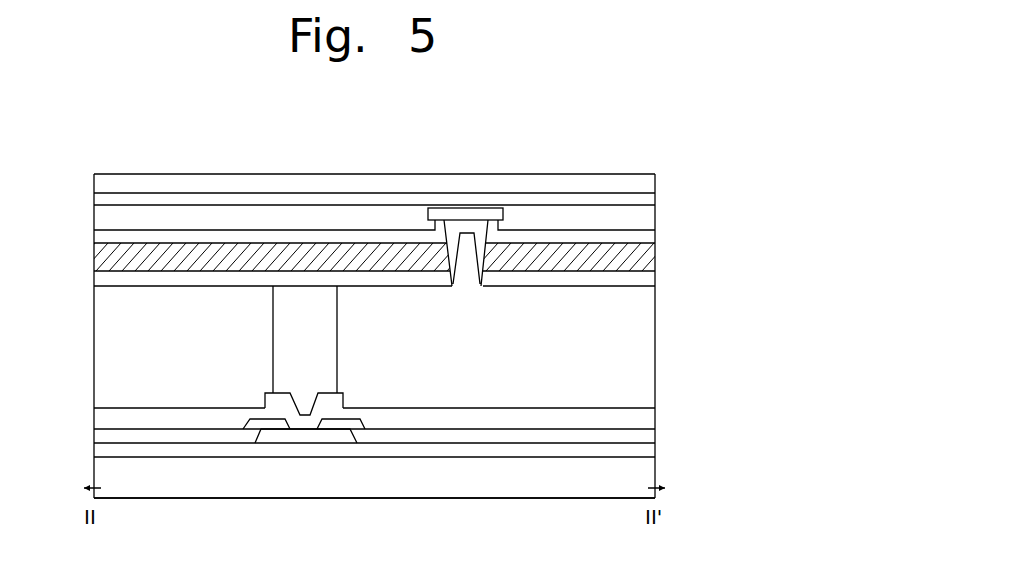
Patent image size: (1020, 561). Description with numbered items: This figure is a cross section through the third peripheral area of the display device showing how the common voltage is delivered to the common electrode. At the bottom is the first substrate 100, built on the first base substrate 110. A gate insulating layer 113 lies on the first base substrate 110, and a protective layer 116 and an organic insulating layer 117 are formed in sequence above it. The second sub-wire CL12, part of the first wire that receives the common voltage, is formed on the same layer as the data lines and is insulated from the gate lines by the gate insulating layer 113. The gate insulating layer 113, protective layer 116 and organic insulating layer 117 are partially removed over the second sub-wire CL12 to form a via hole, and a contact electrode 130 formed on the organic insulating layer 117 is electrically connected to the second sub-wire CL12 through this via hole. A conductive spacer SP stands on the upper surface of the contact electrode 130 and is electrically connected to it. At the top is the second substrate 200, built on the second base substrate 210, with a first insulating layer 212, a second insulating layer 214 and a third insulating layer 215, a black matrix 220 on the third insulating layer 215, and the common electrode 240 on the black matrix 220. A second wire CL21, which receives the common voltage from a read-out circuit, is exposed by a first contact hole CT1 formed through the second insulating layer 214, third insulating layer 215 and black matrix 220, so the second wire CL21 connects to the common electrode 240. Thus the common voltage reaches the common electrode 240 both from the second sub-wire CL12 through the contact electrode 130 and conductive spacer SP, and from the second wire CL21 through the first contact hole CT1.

The second substrate 200 is at (439, 227).
The second base substrate 210 is at (647, 183).
The first insulating layer 212 is at (647, 199).
The second insulating layer 214 is at (647, 222).
The third insulating layer 215 is at (647, 238).
The black matrix 220 is at (648, 253).
The common electrode 240 is at (418, 283).
The second wire CL21 is at (463, 208).
The first contact hole CT1 is at (465, 277).
The first substrate 100 is at (452, 442).
The organic insulating layer 117 is at (652, 410).
The protective layer 116 is at (647, 433).
The gate insulating layer 113 is at (650, 450).
The first base substrate 110 is at (418, 483).
The contact electrode 130 is at (289, 415).
The conductive spacer SP is at (282, 362).
The second sub-wire CL12 is at (342, 437).